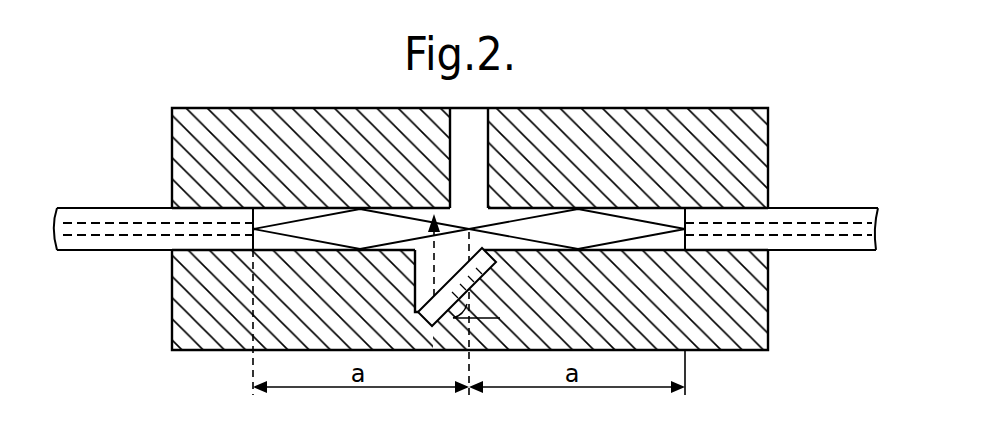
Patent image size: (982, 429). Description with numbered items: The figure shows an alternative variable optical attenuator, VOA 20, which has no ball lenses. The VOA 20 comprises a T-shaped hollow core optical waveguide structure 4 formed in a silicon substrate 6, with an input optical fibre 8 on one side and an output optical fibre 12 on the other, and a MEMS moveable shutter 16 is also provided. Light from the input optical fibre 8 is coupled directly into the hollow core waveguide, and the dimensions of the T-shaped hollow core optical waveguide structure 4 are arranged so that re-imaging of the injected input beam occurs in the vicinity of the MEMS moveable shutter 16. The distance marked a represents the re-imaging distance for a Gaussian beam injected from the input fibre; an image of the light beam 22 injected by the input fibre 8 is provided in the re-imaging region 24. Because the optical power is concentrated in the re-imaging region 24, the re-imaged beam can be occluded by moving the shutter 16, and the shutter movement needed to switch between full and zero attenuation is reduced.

The T-shaped hollow core optical waveguide structure 4 is at (469, 110).
The silicon substrate 6 is at (727, 144).
The input optical fibre 8 is at (103, 208).
The output optical fibre 12 is at (818, 208).
The MEMS moveable shutter 16 is at (429, 327).
The VOA 20 is at (756, 370).
The light beam 22 is at (256, 227).
The re-imaging region 24 is at (476, 227).